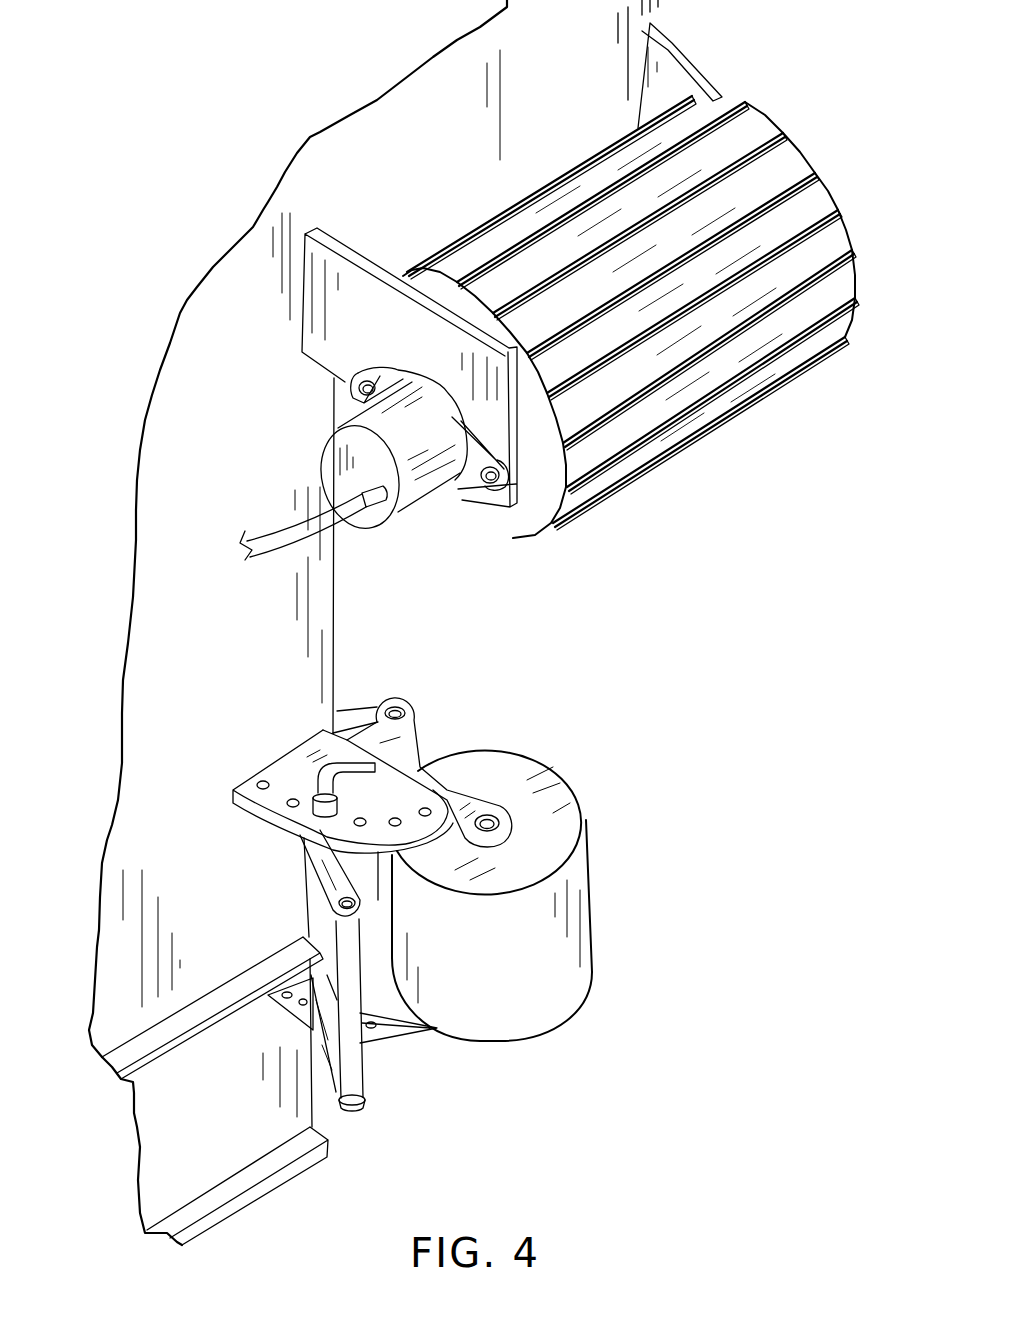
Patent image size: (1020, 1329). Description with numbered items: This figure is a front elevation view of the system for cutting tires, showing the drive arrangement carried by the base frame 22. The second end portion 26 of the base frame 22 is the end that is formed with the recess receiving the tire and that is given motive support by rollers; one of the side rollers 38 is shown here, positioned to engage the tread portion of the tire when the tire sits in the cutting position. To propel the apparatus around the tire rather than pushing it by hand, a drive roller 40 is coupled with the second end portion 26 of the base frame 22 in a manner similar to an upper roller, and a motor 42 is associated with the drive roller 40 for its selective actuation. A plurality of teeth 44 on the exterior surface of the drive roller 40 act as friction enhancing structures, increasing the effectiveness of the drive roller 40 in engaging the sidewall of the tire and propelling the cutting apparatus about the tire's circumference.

The base frame 22 is at (163, 652).
The second end portion 26 is at (330, 633).
The side roller 38 is at (500, 777).
The drive roller 40 is at (642, 279).
The motor 42 is at (408, 463).
The teeth 44 is at (738, 144).